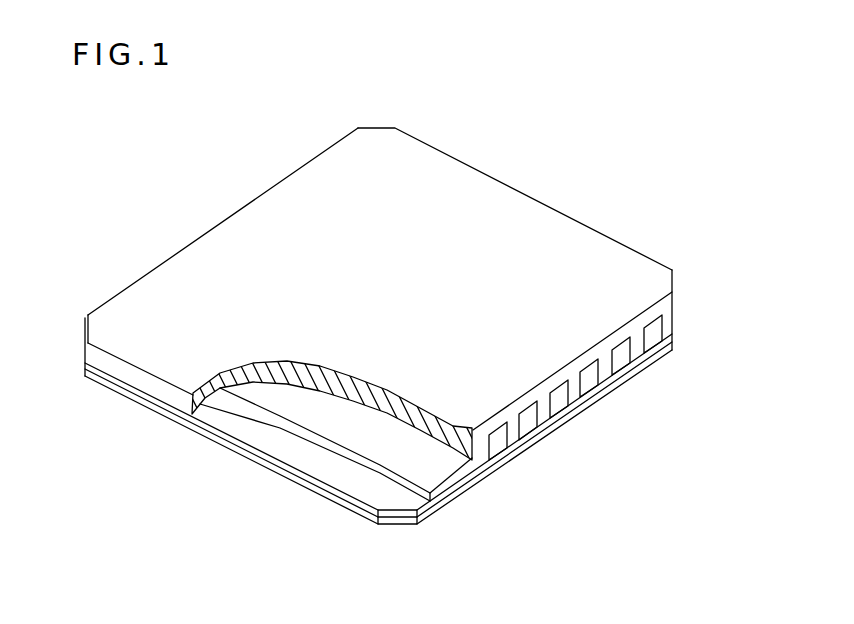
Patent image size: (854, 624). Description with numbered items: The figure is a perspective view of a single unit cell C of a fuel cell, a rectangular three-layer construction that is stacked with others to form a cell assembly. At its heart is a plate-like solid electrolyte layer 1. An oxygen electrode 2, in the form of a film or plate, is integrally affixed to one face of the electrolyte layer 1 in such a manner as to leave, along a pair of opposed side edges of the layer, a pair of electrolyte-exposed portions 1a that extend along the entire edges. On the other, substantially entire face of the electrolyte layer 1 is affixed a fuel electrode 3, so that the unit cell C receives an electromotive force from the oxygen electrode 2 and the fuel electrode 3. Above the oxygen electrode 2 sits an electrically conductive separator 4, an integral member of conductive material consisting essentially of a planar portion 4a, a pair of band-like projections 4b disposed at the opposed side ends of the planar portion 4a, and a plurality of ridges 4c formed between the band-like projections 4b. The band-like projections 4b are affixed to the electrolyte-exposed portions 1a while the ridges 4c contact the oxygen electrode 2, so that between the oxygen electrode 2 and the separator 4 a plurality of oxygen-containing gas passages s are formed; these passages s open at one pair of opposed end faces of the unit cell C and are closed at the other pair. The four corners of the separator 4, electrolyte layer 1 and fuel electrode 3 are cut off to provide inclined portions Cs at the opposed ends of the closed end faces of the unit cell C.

The unit cell C is at (226, 135).
The inclined portions Cs is at (381, 125).
The electrolyte layer 1 is at (673, 338).
The electrolyte-exposed portions 1a is at (348, 482).
The oxygen electrode 2 is at (441, 480).
The fuel electrode 3 is at (661, 358).
The electrically conductive separator 4 is at (455, 178).
The planar portion 4a is at (518, 206).
The band-like projections 4b is at (666, 292).
The ridges 4c is at (566, 392).
The oxygen-containing gas passage s is at (525, 428).